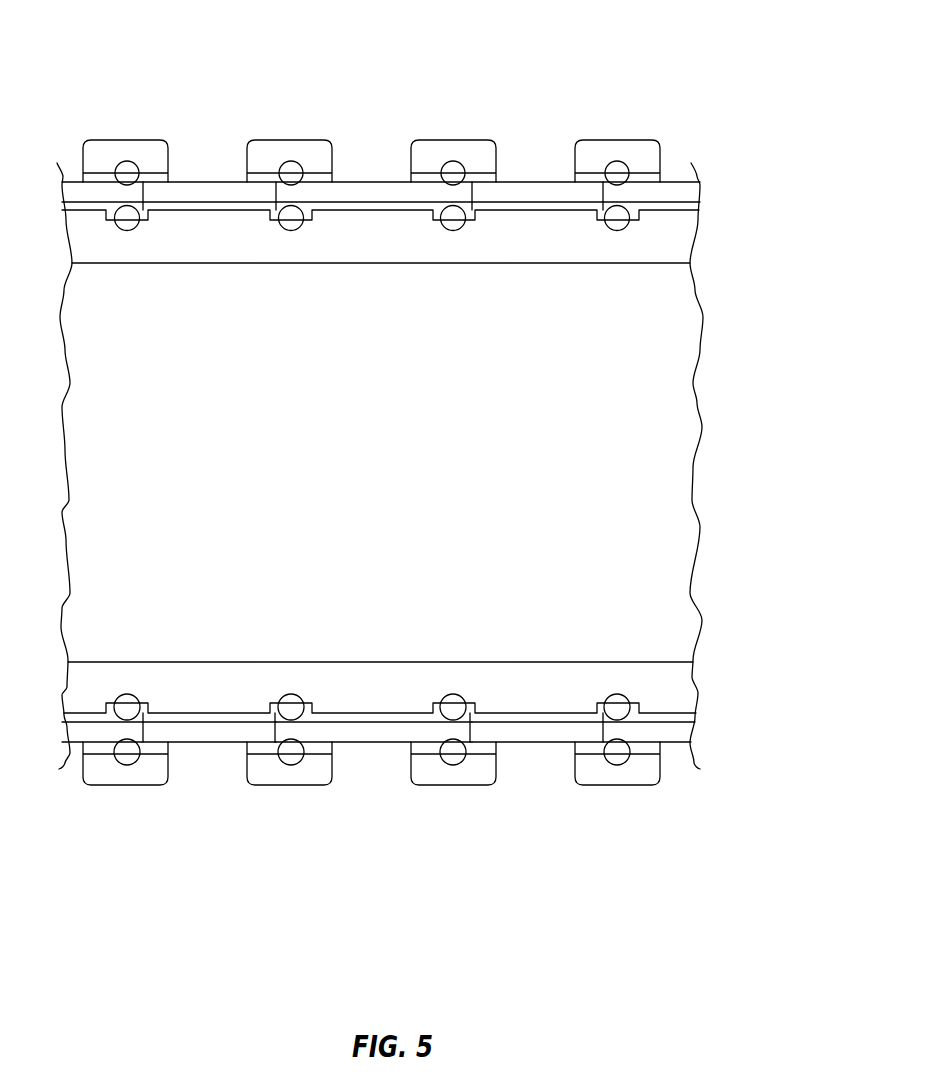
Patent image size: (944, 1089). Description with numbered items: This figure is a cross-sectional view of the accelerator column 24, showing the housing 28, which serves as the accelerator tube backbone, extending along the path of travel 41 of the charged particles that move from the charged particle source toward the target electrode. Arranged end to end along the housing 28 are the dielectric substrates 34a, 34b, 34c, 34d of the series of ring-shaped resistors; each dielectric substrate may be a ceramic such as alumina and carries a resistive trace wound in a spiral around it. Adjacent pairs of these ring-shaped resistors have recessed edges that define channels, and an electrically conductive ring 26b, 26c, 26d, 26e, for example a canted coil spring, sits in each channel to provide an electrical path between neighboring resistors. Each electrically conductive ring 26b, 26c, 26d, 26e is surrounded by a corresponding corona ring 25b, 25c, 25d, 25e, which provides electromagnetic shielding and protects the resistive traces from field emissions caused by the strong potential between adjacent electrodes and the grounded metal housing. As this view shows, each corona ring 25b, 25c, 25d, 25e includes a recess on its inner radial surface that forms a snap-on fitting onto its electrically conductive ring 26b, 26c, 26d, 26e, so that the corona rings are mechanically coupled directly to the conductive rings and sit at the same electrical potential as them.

The accelerator column 24 is at (203, 825).
The corona ring 25b is at (595, 150).
The corona ring 25c is at (430, 150).
The corona ring 25d is at (259, 150).
The corona ring 25e is at (103, 150).
The electrically conductive ring 26b is at (617, 173).
The electrically conductive ring 26c is at (453, 173).
The electrically conductive ring 26d is at (291, 173).
The electrically conductive ring 26e is at (127, 173).
The housing 28 is at (340, 230).
The dielectric substrate 34a is at (678, 192).
The dielectric substrate 34b is at (517, 192).
The dielectric substrate 34c is at (338, 193).
The dielectric substrate 34d is at (188, 192).
The path of travel 41 is at (640, 475).